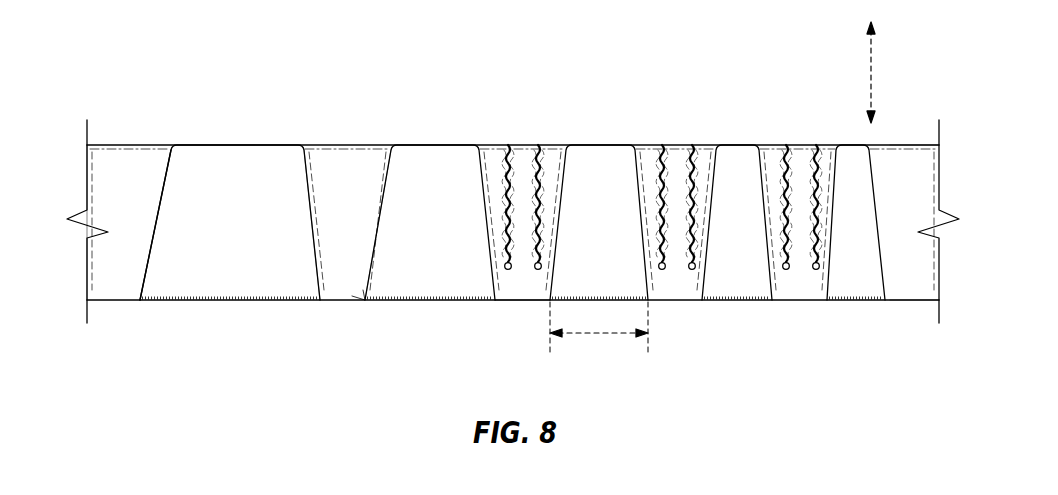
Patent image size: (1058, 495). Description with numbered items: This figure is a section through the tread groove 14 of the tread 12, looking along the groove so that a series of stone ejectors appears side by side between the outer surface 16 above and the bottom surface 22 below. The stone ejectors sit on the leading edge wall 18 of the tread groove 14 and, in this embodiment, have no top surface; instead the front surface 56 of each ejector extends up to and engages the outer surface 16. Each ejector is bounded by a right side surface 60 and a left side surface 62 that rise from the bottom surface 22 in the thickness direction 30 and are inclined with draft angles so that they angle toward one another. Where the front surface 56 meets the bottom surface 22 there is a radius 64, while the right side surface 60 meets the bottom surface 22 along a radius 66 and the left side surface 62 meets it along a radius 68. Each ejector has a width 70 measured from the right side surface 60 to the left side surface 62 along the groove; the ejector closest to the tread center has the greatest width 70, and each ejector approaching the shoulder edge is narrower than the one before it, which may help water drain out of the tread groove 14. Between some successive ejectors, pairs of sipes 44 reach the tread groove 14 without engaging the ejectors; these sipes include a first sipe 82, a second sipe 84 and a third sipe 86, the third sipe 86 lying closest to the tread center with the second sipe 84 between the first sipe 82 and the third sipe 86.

The tread 12 is at (910, 145).
The tread groove 14 is at (105, 163).
The outer surface 16 is at (146, 145).
The leading edge wall 18 is at (365, 162).
The bottom surface 22 is at (913, 299).
The thickness direction 30 is at (868, 72).
The sipes 44 is at (574, 174).
The front surface 56 is at (230, 222).
The right side surface 60 is at (143, 277).
The left side surface 62 is at (310, 202).
The radius 64 is at (442, 300).
The radius 66 is at (363, 298).
The radius 68 is at (497, 302).
The width 70 is at (595, 336).
The first sipe 82 is at (662, 145).
The second sipe 84 is at (537, 145).
The third sipe 86 is at (508, 145).